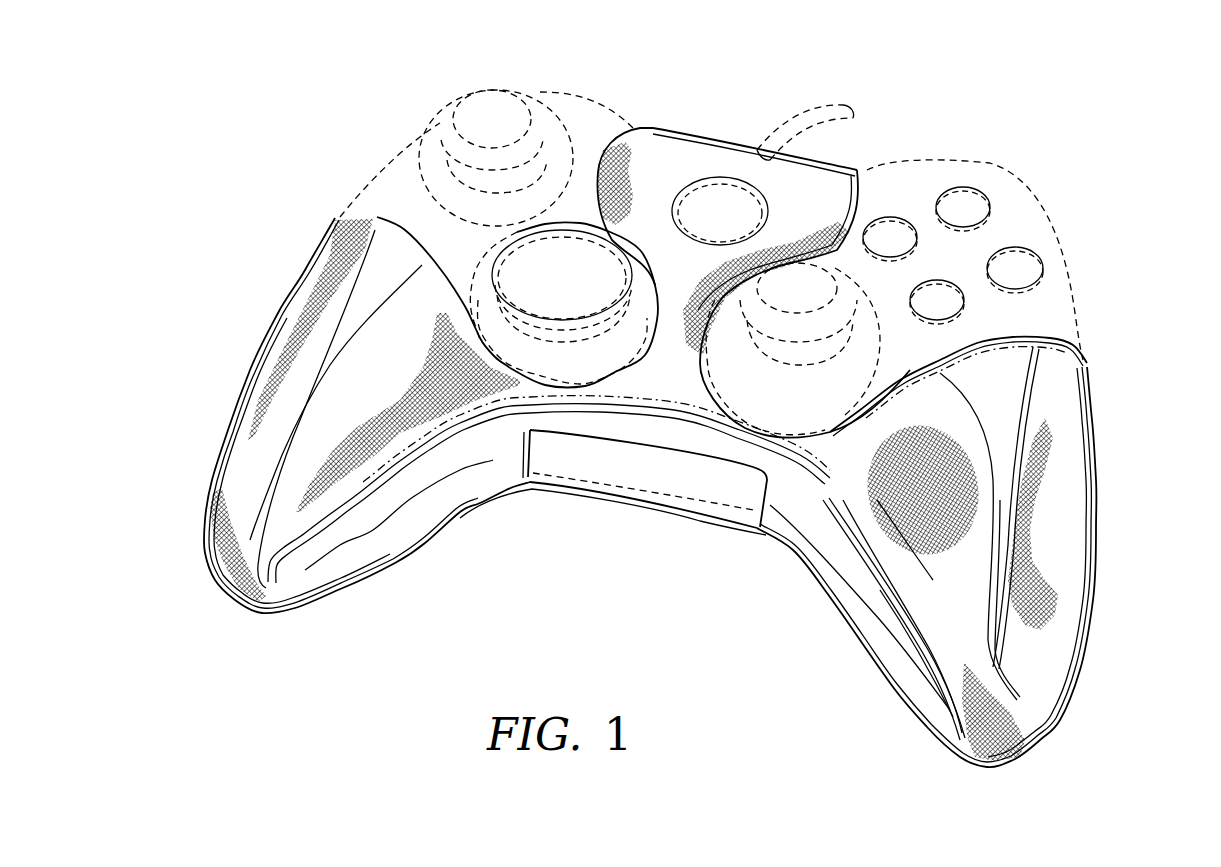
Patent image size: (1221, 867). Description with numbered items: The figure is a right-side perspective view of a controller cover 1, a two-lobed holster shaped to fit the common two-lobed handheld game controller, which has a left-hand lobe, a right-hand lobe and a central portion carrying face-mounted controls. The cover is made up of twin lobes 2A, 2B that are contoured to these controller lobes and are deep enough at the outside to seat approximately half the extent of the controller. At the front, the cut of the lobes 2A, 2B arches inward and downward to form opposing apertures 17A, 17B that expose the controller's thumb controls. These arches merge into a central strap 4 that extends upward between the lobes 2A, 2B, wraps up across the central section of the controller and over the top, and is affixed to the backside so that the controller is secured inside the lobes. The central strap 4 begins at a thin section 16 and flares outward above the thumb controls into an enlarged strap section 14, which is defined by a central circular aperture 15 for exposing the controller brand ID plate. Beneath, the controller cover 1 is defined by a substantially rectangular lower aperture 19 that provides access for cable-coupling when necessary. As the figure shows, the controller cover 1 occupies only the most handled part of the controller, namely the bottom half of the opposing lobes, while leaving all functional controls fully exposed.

The controller cover 1 is at (240, 229).
The lobe 2A is at (244, 385).
The lobe 2B is at (1097, 518).
The central strap 4 is at (720, 148).
The enlarged strap section 14 is at (668, 150).
The central circular aperture 15 is at (735, 195).
The thin section 16 is at (688, 312).
The aperture 17A is at (615, 345).
The aperture 17B is at (738, 401).
The lower aperture 19 is at (530, 448).